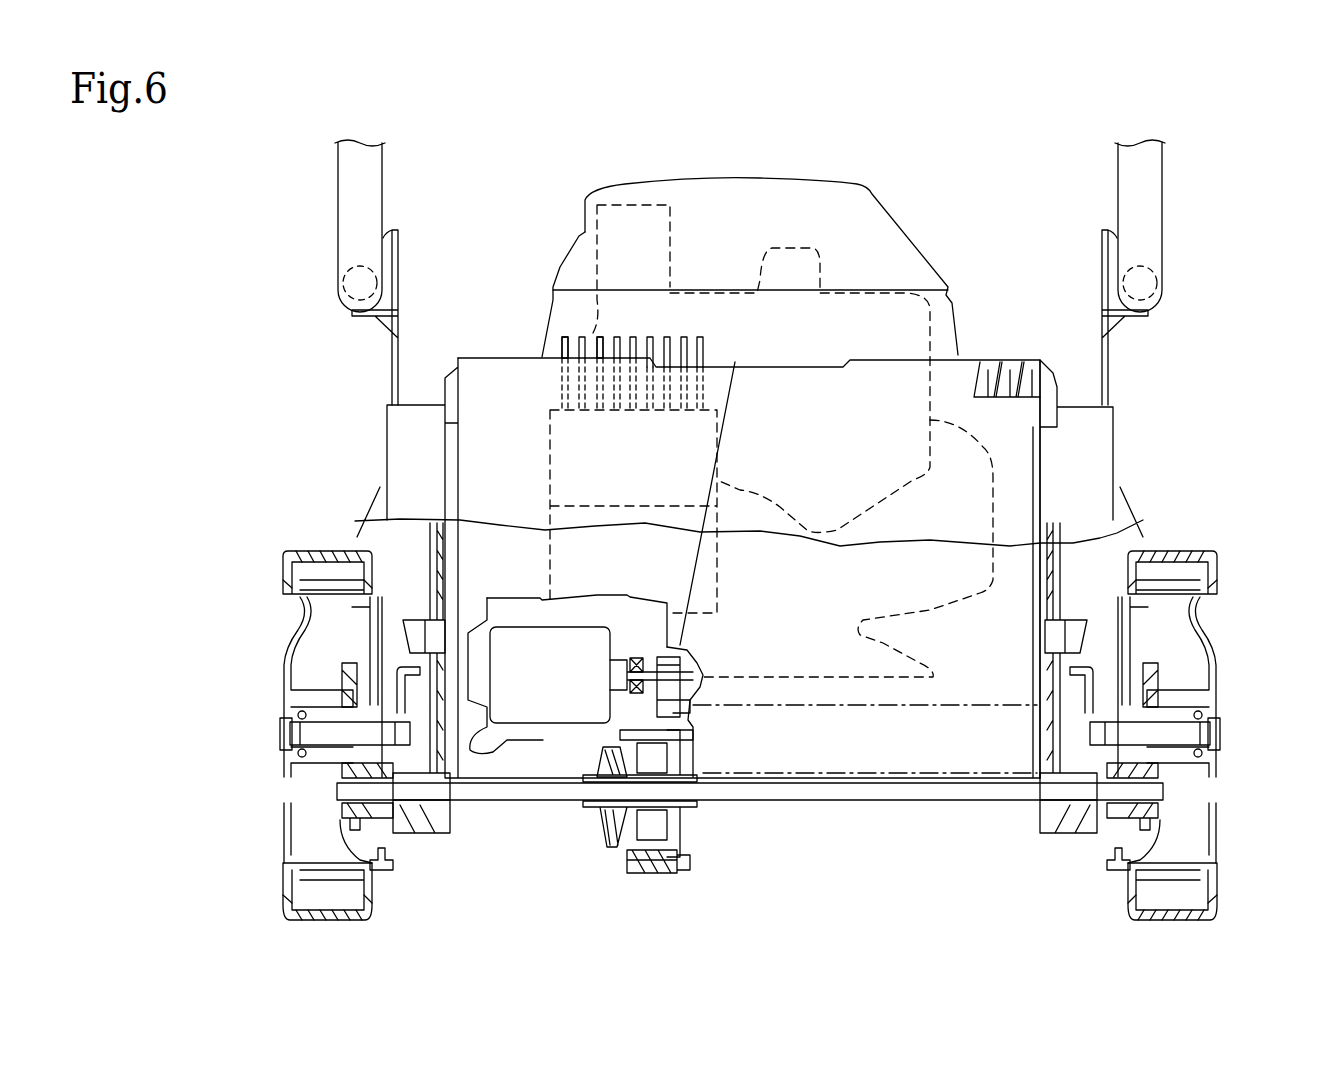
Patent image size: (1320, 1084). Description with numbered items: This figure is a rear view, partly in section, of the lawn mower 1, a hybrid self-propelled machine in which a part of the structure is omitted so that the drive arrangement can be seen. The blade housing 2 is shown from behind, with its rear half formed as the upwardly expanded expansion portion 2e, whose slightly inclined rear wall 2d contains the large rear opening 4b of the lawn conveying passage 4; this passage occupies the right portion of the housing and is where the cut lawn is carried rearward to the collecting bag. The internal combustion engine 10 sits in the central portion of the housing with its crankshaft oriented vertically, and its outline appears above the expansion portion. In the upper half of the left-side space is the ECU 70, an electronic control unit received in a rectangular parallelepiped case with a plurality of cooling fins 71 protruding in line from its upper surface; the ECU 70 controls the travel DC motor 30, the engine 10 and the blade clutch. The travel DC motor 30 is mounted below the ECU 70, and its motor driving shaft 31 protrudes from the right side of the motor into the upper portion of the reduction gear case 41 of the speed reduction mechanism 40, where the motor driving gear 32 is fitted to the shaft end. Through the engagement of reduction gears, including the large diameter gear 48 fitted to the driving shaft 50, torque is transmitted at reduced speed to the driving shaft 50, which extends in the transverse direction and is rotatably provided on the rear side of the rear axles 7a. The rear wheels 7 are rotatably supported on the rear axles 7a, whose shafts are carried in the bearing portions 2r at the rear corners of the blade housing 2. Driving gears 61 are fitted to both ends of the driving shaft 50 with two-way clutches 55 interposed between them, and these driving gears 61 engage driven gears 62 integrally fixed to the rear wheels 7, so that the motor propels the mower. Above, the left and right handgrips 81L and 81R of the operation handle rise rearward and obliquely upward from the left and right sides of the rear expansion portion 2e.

The lawn mower 1 is at (752, 159).
The blade housing 2 is at (771, 345).
The rear wall 2d is at (490, 432).
The expansion portion 2e is at (808, 368).
The bearing portion 2r is at (437, 838).
The lawn conveying passage 4 is at (940, 493).
The rear opening 4b is at (868, 469).
The rear wheel 7 is at (310, 549).
The rear axle 7a is at (320, 727).
The internal combustion engine 10 is at (1000, 478).
The travel DC motor 30 is at (527, 627).
The motor driving shaft 31 is at (670, 675).
The motor driving gear 32 is at (670, 643).
The speed reduction mechanism 40 is at (714, 760).
The reduction gear case 41 is at (703, 733).
The large diameter gear 48 is at (615, 847).
The driving shaft 50 is at (800, 803).
The two-way clutch 55 is at (360, 817).
The driving gear 61 is at (348, 810).
The driven gear 62 is at (347, 663).
The ECU 70 is at (548, 443).
The cooling fin 71 is at (594, 333).
The left handgrip 81L is at (383, 197).
The right handgrip 81R is at (1118, 182).